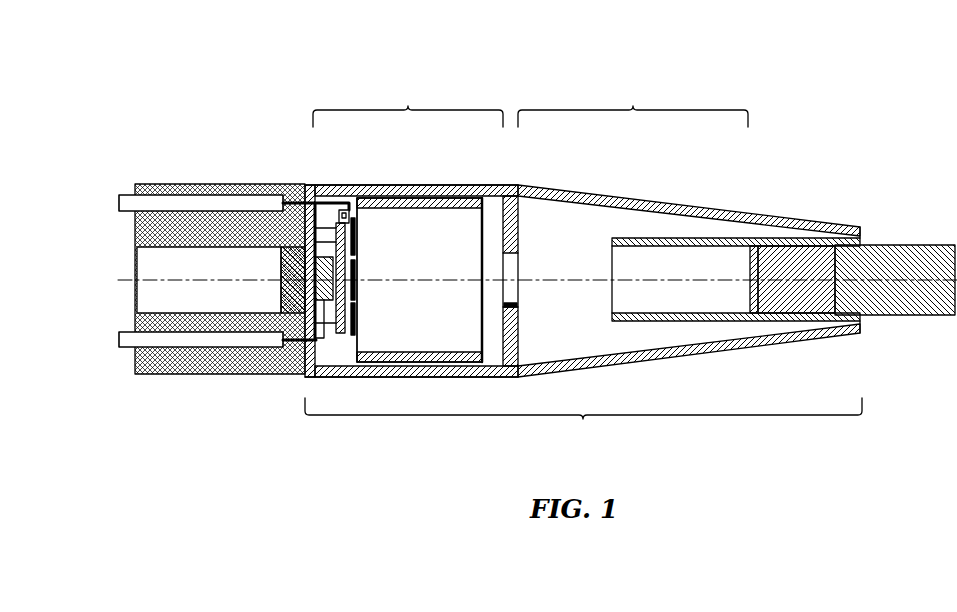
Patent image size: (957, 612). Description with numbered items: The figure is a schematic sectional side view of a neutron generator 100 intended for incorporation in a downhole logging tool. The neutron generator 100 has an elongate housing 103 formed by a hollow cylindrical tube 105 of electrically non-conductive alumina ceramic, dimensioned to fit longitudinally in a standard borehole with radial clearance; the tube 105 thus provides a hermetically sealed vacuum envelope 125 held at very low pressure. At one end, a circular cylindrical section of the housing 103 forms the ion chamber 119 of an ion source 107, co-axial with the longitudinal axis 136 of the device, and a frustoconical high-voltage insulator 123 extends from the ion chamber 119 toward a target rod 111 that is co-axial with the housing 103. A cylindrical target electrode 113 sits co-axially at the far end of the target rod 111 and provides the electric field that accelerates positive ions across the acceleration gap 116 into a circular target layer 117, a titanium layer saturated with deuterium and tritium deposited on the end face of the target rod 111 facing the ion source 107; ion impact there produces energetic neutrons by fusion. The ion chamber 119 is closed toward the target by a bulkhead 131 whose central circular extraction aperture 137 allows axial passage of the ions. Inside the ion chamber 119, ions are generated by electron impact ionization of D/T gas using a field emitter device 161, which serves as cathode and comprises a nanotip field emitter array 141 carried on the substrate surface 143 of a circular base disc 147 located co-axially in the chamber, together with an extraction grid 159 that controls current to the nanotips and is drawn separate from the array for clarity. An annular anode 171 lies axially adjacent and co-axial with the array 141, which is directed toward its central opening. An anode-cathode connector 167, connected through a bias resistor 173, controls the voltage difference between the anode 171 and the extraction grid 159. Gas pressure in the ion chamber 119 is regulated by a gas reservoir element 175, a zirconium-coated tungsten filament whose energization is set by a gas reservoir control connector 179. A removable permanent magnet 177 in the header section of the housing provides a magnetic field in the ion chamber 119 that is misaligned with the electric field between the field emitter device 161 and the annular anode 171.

The neutron generator 100 is at (537, 245).
The elongate housing 103 is at (540, 182).
The hollow cylindrical tube 105 is at (485, 185).
The ion source 107 is at (408, 101).
The target rod 111 is at (792, 244).
The target electrode 113 is at (893, 254).
The acceleration gap 116 is at (633, 104).
The target layer 117 is at (748, 278).
The ion chamber 119 is at (472, 302).
The frustoconical high-voltage insulator 123 is at (630, 198).
The vacuum envelope 125 is at (583, 422).
The bulkhead 131 is at (512, 241).
The longitudinal axis 136 is at (556, 277).
The extraction aperture 137 is at (511, 330).
The field emitter array 141 is at (358, 259).
The substrate surface 143 is at (358, 298).
The base disc 147 is at (341, 336).
The extraction grid 159 is at (356, 240).
The field emitter device 161 is at (371, 272).
The anode-cathode connector 167 is at (280, 202).
The annular anode 171 is at (391, 192).
The bias resistor 173 is at (344, 210).
The gas reservoir element 175 is at (325, 287).
The permanent magnet 177 is at (297, 285).
The gas reservoir control connector 179 is at (265, 341).